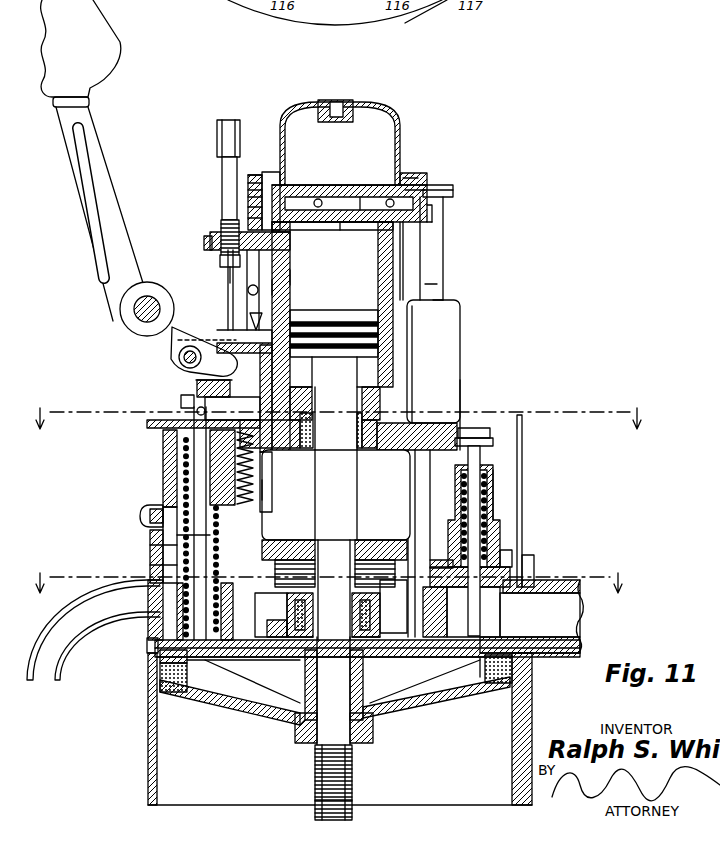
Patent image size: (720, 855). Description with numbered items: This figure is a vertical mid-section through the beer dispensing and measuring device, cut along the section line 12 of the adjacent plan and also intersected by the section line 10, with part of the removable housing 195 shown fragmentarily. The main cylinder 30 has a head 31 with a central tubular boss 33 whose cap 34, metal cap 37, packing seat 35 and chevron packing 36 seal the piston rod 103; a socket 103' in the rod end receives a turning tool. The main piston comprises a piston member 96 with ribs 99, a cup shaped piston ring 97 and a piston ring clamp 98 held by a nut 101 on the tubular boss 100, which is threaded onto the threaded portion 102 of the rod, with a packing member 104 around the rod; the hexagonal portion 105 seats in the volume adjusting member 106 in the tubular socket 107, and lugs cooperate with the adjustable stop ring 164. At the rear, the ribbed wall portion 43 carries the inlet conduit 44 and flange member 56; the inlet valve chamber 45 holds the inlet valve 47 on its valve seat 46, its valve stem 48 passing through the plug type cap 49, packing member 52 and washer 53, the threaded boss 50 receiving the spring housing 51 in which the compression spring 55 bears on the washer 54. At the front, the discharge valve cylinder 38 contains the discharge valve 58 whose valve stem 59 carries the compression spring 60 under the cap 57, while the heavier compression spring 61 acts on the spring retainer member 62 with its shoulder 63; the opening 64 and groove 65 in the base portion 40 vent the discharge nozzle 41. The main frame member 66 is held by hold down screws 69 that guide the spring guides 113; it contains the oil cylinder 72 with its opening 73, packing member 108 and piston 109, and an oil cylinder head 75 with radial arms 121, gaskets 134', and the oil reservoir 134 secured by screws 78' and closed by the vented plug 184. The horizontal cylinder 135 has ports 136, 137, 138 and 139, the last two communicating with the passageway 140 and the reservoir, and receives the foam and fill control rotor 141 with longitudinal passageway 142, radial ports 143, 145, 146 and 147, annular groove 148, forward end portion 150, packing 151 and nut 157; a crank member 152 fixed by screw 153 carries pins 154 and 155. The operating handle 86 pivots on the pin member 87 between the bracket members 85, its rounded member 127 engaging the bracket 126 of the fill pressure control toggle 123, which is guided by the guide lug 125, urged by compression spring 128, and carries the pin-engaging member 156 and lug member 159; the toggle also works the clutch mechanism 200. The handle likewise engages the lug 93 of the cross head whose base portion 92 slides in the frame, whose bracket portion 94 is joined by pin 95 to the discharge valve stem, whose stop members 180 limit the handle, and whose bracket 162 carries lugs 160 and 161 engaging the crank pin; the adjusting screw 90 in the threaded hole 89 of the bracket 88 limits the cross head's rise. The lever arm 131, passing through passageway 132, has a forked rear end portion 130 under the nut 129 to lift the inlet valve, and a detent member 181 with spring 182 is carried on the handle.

The main cylinder 30 is at (148, 757).
The head 31 is at (233, 665).
The tubular boss 33 is at (357, 584).
The cap 34 is at (378, 620).
The packing seat 35 is at (313, 634).
The packing 36 is at (313, 617).
The metal cap 37 is at (313, 600).
The discharge valve cylinder 38 is at (226, 593).
The base portion 40 is at (175, 556).
The discharge nozzle 41 is at (45, 672).
The ribbed wall portion 43 is at (530, 712).
The inlet conduit 44 is at (585, 626).
The inlet valve chamber 45 is at (494, 615).
The valve seat 46 is at (520, 636).
The inlet valve 47 is at (492, 626).
The valve stem 48 is at (482, 458).
The plug type cap 49 is at (522, 588).
The internally threaded boss 50 is at (503, 540).
The spring housing 51 is at (490, 478).
The packing member 52 is at (508, 556).
The washer 53 is at (447, 573).
The washer 54 is at (497, 522).
The compression spring 55 is at (492, 500).
The flange member 56 is at (533, 572).
The cap 57 is at (165, 440).
The discharge valve 58 is at (177, 594).
The valve stem 59 is at (195, 535).
The compression spring 60 is at (175, 565).
The compression spring 61 is at (178, 452).
The spring retainer member 62 is at (178, 492).
The shoulder 63 is at (200, 480).
The opening 64 is at (150, 507).
The groove 65 is at (175, 541).
The main frame member 66 is at (268, 474).
The hold down screws 69 is at (443, 266).
The oil cylinder 72 is at (437, 253).
The opening 73 is at (354, 393).
The oil cylinder head 75 is at (432, 214).
The screws 78' is at (436, 170).
The bracket members 85 is at (180, 266).
The operating handle 86 is at (78, 180).
The pin member 87 is at (133, 320).
The bracket 88 is at (147, 280).
The threaded hole 89 is at (281, 232).
The adjusting screw 90 is at (226, 118).
The base portion 92 is at (280, 382).
The lug 93 is at (245, 326).
The bracket portion 94 is at (238, 420).
The pin 95 is at (205, 396).
The piston member 96 is at (463, 657).
The piston ring 97 is at (510, 672).
The piston ring clamp 98 is at (444, 706).
The ribs 99 is at (398, 690).
The tubular boss 100 is at (356, 764).
The nut 101 is at (372, 742).
The externally threaded portion 102 is at (313, 778).
The piston rod 103 is at (286, 736).
The socket 103' is at (356, 795).
The packing member 104 is at (344, 660).
The hexagonal portion 105 is at (334, 547).
The volume adjusting member 106 is at (364, 537).
The tubular socket 107 is at (372, 560).
The packing member 108 is at (302, 422).
The piston 109 is at (364, 312).
The spring guides 113 is at (452, 320).
The radial arms 121 is at (445, 193).
The fill pressure control toggle 123 is at (232, 286).
The guide lug 125 is at (263, 528).
The bracket 126 is at (205, 383).
The rounded member 127 is at (196, 371).
The compression spring 128 is at (263, 487).
The nut 129 is at (492, 437).
The forked rear end portion 130 is at (492, 447).
The lever arm 131 is at (457, 428).
The passageway 132 is at (390, 421).
The oil reservoir 134 is at (344, 139).
The gaskets 134' is at (467, 187).
The horizontal cylinder 135 is at (337, 196).
The port 136 is at (328, 231).
The port 137 is at (345, 243).
The port 138 is at (437, 238).
The port 139 is at (352, 196).
The passageway 140 is at (437, 284).
The foam and fill control rotor 141 is at (455, 194).
The longitudinal passageway 142 is at (398, 183).
The radial port 143 is at (320, 196).
The radial port 145 is at (408, 185).
The radial port 146 is at (352, 231).
The radial port 147 is at (372, 243).
The annular groove 148 is at (375, 196).
The forward end portion 150 is at (285, 170).
The packing 151 is at (300, 196).
The crank member 152 is at (256, 175).
The screw 153 is at (249, 196).
The pin 154 is at (249, 177).
The pin 155 is at (249, 219).
The pin-engaging member 156 is at (249, 168).
The nut 157 is at (262, 185).
The lug member 159 is at (249, 184).
The lug 160 is at (274, 290).
The lug 161 is at (286, 279).
The bracket 162 is at (248, 300).
The adjustable stop ring 164 is at (290, 656).
The stop members 180 is at (190, 402).
The detent member 181 is at (178, 357).
The spring 182 is at (178, 351).
The vented removable plug 184 is at (340, 108).
The removable housing 195 is at (165, 462).
The clutch mechanism 200 is at (145, 512).
The section line 10- 10 is at (333, 576).
The section line 12- 12 is at (338, 411).